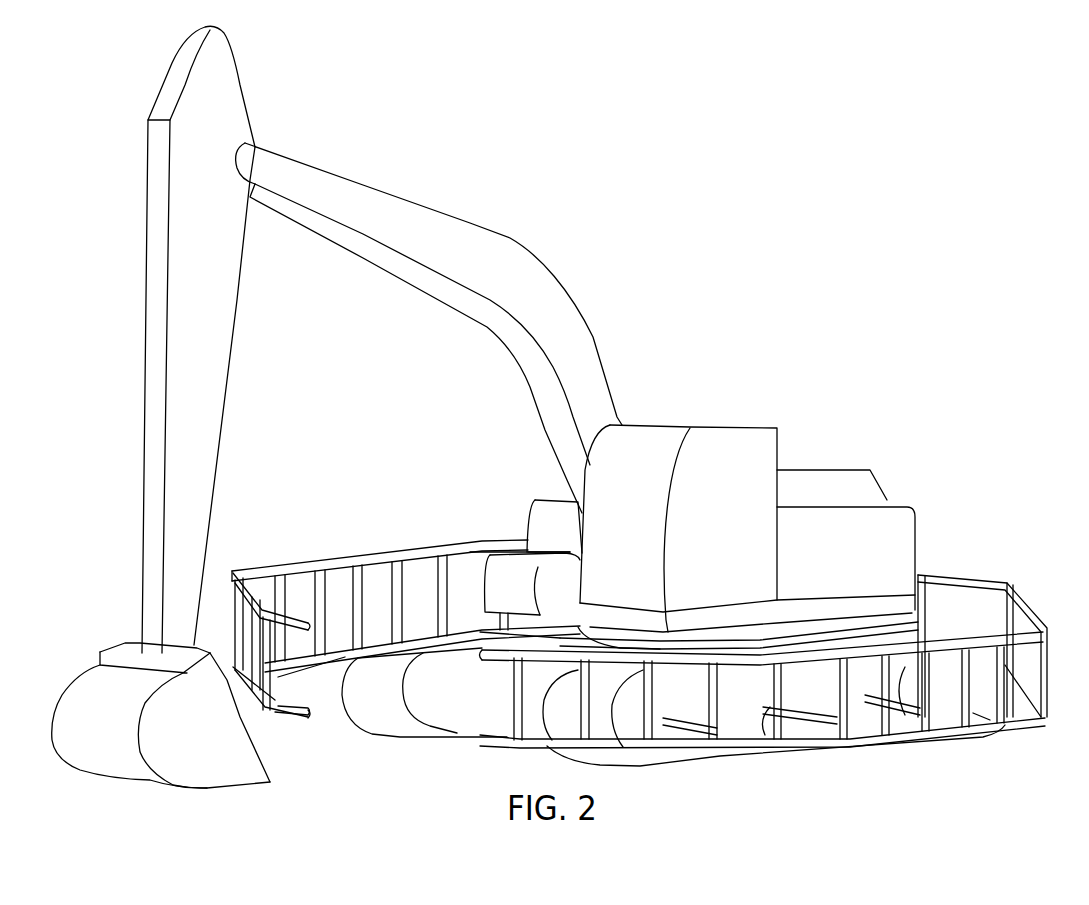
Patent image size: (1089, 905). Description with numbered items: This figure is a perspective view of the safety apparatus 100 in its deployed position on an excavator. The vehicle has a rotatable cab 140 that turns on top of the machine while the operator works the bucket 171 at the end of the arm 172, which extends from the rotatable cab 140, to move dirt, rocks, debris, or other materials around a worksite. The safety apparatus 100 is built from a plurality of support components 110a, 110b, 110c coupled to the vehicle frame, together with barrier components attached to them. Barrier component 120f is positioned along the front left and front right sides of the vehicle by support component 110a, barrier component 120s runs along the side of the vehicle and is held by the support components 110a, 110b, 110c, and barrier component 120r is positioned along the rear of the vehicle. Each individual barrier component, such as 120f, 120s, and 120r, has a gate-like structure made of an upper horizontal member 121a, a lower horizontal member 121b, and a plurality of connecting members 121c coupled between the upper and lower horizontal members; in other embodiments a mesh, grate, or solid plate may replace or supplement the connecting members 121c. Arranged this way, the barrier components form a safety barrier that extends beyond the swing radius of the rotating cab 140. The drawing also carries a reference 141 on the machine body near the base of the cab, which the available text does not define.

The safety apparatus 100 is at (1038, 557).
The support component 110a is at (302, 677).
The support component 110b is at (332, 690).
The support component 110c is at (972, 713).
The barrier component 120f is at (227, 630).
The barrier component 120s is at (267, 555).
The barrier component 120r is at (958, 580).
The upper horizontal member 121a is at (302, 562).
The lower horizontal member 121b is at (382, 637).
The connecting members 121c is at (353, 572).
The rotatable cab 140 is at (748, 536).
The swing frame 141 is at (870, 622).
The bucket 171 is at (122, 743).
The arm 172 is at (491, 271).